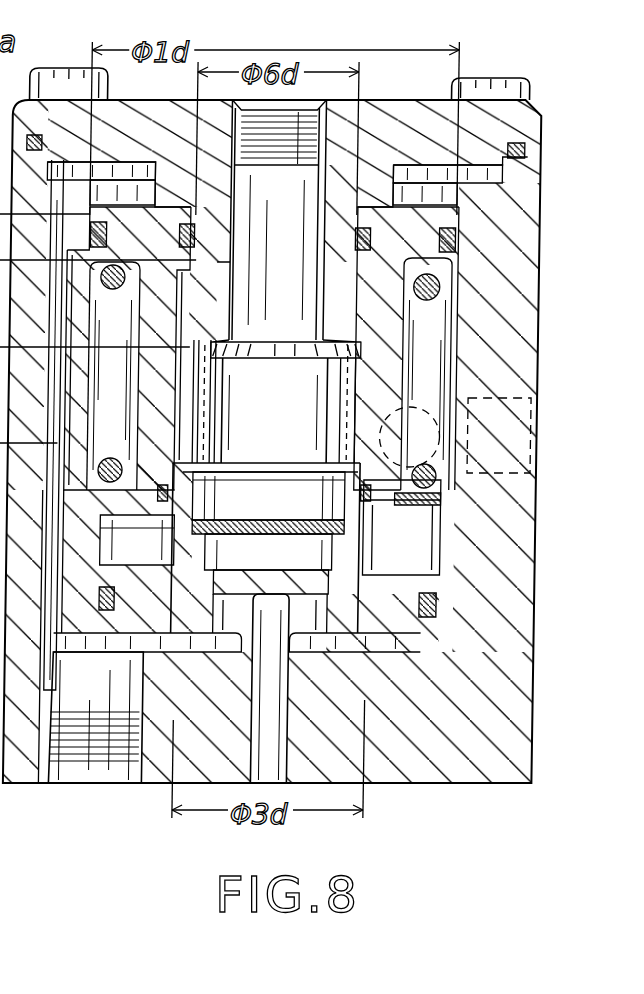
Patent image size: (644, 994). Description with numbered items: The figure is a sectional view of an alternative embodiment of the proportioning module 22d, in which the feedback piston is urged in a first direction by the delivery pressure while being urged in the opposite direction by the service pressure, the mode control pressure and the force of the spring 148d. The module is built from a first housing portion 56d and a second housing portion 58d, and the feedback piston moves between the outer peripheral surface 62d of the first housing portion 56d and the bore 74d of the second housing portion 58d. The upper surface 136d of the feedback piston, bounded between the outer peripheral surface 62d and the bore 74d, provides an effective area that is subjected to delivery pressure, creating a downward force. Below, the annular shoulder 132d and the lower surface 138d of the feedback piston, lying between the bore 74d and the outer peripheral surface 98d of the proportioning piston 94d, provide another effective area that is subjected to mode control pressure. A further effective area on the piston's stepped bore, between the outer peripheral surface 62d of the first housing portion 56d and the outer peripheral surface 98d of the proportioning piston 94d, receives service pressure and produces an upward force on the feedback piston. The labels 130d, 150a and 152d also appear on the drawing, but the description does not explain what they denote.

The proportioning module 22d is at (541, 72).
The first housing portion 56d is at (530, 125).
The second housing portion 58d is at (520, 752).
The outer peripheral surface 62d is at (358, 322).
The bore 74d is at (452, 358).
The annular shoulder 132d is at (462, 290).
The upper surface 136d is at (458, 203).
The seal ring 130d is at (452, 222).
The piston 150a is at (312, 403).
The outer peripheral surface 98d is at (398, 560).
The lower surface 138d is at (445, 545).
The proportioning piston 94d is at (430, 629).
The spring 148d is at (456, 478).
The threaded bore 152d is at (112, 732).